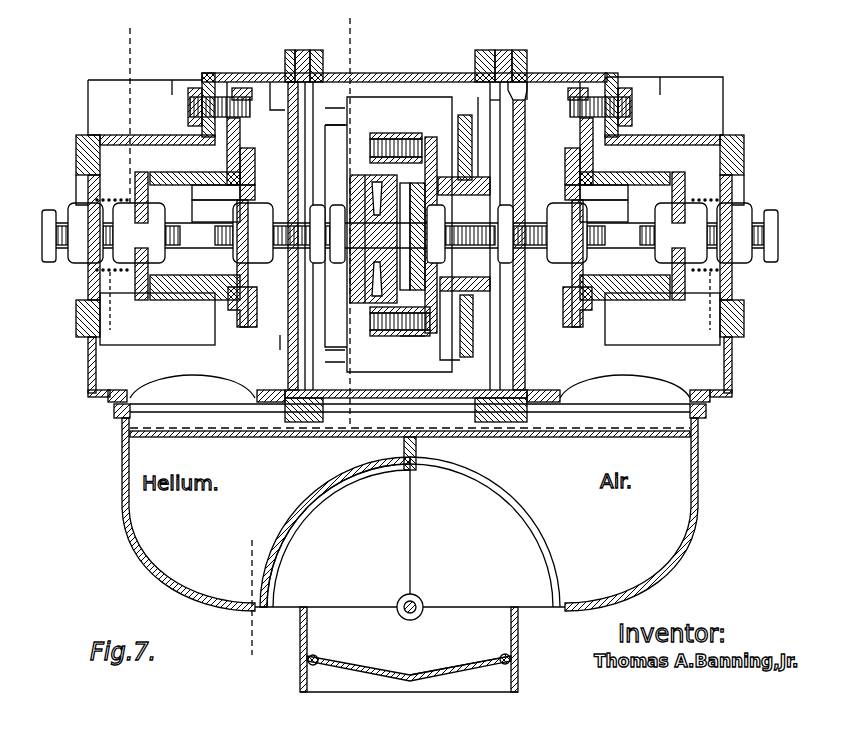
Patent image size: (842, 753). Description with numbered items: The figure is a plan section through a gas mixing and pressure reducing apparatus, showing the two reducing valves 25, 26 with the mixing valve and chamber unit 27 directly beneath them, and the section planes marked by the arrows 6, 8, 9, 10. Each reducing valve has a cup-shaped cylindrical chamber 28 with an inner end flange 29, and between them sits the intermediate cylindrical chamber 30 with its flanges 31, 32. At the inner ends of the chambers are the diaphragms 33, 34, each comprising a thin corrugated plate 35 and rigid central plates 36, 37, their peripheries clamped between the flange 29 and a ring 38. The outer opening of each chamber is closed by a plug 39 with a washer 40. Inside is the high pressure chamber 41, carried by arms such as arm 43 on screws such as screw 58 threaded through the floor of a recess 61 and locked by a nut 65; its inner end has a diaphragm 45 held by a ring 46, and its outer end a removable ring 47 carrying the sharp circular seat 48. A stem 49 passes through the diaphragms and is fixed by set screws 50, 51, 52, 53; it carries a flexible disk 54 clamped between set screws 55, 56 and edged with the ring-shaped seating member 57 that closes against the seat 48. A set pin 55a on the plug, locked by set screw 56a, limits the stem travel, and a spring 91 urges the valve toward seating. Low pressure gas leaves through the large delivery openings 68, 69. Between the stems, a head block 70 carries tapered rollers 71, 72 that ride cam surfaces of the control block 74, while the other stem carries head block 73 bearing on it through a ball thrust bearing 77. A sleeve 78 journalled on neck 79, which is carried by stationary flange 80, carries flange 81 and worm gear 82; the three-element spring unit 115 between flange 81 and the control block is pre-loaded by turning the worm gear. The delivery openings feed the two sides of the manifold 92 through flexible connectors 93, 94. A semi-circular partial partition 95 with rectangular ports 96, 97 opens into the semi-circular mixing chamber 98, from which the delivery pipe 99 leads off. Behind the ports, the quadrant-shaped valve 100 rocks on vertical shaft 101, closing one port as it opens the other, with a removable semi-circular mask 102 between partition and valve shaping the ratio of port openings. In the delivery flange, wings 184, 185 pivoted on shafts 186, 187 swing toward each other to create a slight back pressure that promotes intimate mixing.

The section line 6- 6 is at (108, 50).
The section line 8- 8 is at (330, 42).
The section line 9- 9 is at (362, 108).
The section line 10- 10 is at (366, 125).
The reducing valve 25 is at (661, 70).
The reducing valve 26 is at (173, 76).
The mixing valve and chamber unit 27 is at (126, 534).
The cylindrical chamber 28 is at (208, 73).
The inner end flange 29 is at (291, 50).
The intermediate cylindrical chamber 30 is at (378, 73).
The flange 31 is at (480, 50).
The flange 32 is at (318, 50).
The diaphragm 33 is at (279, 106).
The diaphragm 34 is at (540, 100).
The flexible corrugated plate 35 is at (299, 102).
The rigid central plate 36 is at (284, 335).
The rigid central plate 37 is at (303, 120).
The ring 38 is at (306, 50).
The plug 39 is at (88, 186).
The washer 40 is at (82, 135).
The high pressure chamber 41 is at (175, 137).
The arm 43 is at (228, 148).
The diaphragm 45 is at (235, 192).
The ring 46 is at (254, 172).
The removable ring 47 is at (167, 172).
The circular ridge or seat 48 is at (165, 300).
The stem 49 is at (205, 250).
The set screw 50 is at (318, 205).
The set screw 51 is at (255, 200).
The set screw 52 is at (252, 292).
The set screw 53 is at (240, 214).
The flexible disk 54 is at (137, 200).
The set screw 55 is at (154, 223).
The set pin or stop 55a is at (795, 282).
The set screw 56 is at (110, 272).
The set screw 56a is at (779, 196).
The ring shaped seating member 57 is at (140, 172).
The screw 58 is at (186, 100).
The recess 61 is at (100, 105).
The lock screw or nut 65 is at (192, 93).
The delivery opening 68 is at (130, 378).
The delivery opening 69 is at (636, 382).
The head block 70 is at (348, 262).
The tapered roller 71 is at (368, 205).
The tapered roller 72 is at (370, 307).
The head block 73 is at (431, 215).
The control block 74 is at (433, 334).
The ball thrust bearing 77 is at (413, 170).
The sleeve 78 is at (480, 170).
The neck 79 is at (478, 290).
The flange 80 is at (478, 92).
The flange 81 is at (415, 337).
The worm gear 82 is at (466, 358).
The spring 91 is at (705, 272).
The manifold 92 is at (185, 592).
The flexible connector 93 is at (118, 412).
The flexible connector 94 is at (706, 408).
The semi-circular partial partition 95 is at (316, 481).
The port 96 is at (292, 490).
The port 97 is at (505, 488).
The mixing chamber 98 is at (433, 532).
The delivery pipe 99 is at (520, 628).
The quadrant shaped valve 100 is at (322, 518).
The vertical shaft 101 is at (400, 613).
The semi-circular mask 102 is at (418, 462).
The spring unit 115 is at (396, 133).
The wing 184 is at (365, 680).
The wing 185 is at (441, 690).
The shaft 186 is at (306, 665).
The shaft 187 is at (515, 660).